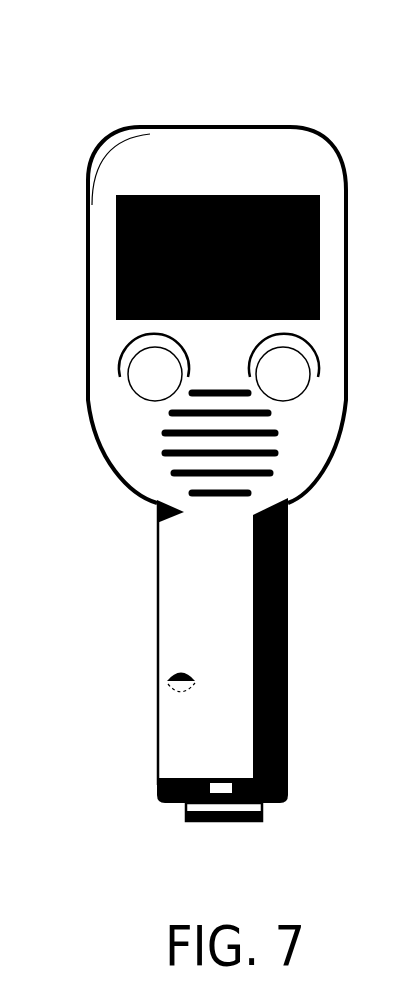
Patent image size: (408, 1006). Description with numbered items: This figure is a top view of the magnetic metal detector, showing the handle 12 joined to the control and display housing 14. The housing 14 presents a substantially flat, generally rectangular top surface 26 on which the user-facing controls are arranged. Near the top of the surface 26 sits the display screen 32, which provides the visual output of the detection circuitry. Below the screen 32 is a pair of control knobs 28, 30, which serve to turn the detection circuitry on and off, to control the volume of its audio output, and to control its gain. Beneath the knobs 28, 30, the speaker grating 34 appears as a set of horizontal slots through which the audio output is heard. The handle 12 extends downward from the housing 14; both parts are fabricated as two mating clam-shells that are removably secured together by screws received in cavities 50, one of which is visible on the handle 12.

The handle 12 is at (300, 642).
The control and display housing 14 is at (153, 118).
The top surface 26 is at (253, 157).
The control knob 28 is at (120, 380).
The control knob 30 is at (317, 358).
The display screen 32 is at (116, 232).
The speaker grating 34 is at (168, 454).
The cavity 50 is at (170, 680).